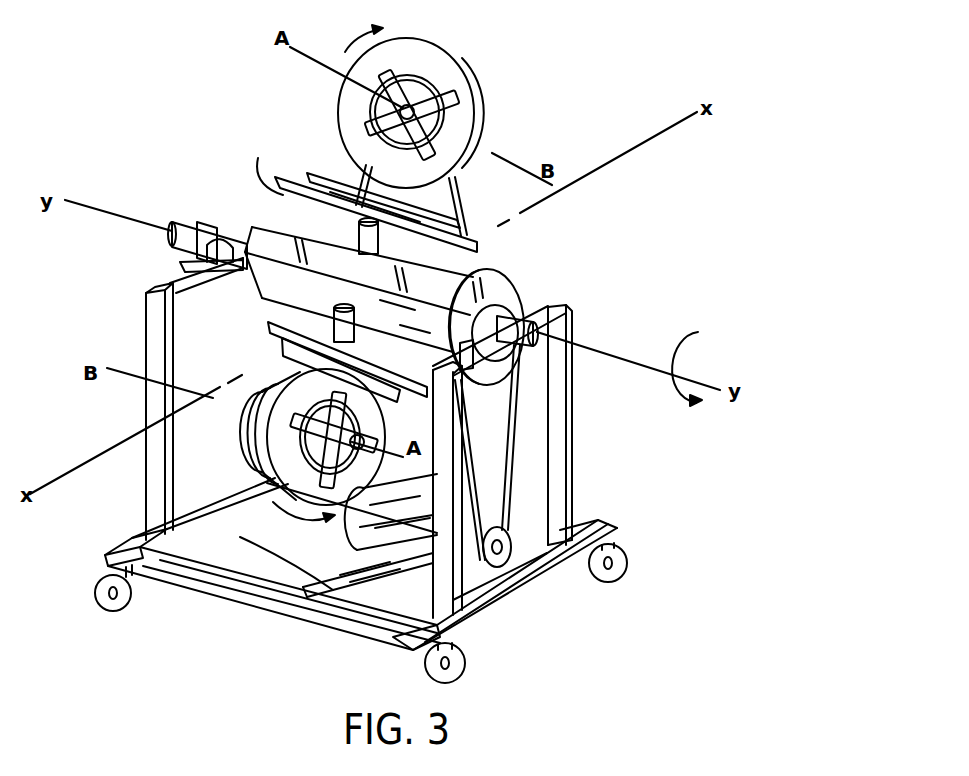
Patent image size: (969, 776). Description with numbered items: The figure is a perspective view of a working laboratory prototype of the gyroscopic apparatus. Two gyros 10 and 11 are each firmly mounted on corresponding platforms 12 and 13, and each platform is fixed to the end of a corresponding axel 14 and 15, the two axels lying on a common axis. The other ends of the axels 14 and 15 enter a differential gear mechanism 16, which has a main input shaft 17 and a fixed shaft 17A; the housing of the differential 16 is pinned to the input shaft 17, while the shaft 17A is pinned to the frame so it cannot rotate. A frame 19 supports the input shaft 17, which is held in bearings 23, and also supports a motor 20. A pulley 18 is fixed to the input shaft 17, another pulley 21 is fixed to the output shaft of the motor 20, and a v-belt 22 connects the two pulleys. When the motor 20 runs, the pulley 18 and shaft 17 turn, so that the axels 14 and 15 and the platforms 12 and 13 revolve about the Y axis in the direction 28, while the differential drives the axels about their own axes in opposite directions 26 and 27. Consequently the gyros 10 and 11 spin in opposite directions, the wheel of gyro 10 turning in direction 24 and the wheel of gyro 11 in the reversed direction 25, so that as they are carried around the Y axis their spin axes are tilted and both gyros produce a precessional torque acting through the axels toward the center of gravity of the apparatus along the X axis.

The gyro 10 is at (466, 75).
The gyro 11 is at (262, 452).
The platform 12 is at (297, 175).
The platform 13 is at (262, 323).
The axel 14 is at (352, 227).
The axel 15 is at (312, 318).
The differential gear mechanism 16 is at (262, 242).
The main input shaft 17 is at (545, 328).
The fixed shaft 17A is at (193, 222).
The pulley 18 is at (503, 283).
The frame 19 is at (573, 455).
The motor 20 is at (373, 525).
The pulley 21 is at (502, 560).
The v-belt 22 is at (518, 423).
The bearings 23 is at (190, 262).
The direction of rotation 24 is at (349, 34).
The direction of rotation 25 is at (250, 552).
The direction of rotation 26 is at (264, 165).
The direction of rotation 27 is at (328, 309).
The direction of rotation 28 is at (701, 362).